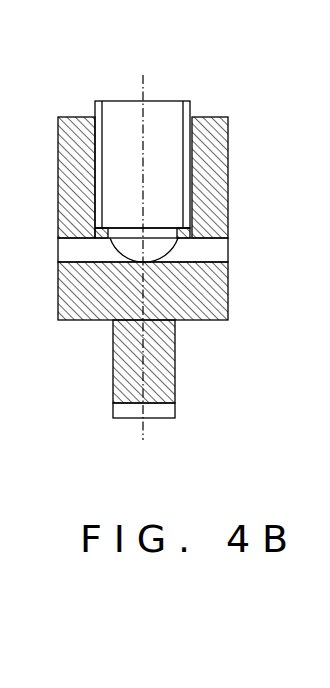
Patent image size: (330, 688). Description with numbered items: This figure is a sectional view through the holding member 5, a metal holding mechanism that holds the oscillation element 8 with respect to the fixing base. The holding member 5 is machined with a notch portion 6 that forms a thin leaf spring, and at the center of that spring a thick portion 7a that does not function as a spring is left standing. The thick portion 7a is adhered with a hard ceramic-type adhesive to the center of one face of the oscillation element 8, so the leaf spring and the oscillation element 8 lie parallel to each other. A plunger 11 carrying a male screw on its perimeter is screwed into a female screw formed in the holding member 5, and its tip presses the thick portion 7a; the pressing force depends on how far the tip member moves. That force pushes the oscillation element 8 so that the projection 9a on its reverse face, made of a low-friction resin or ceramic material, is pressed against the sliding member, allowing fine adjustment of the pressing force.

The holding member 5 is at (205, 130).
The plunger 11 is at (157, 177).
The notch portion 6 is at (212, 247).
The thick portion 7a is at (168, 287).
The oscillation element 8 is at (160, 363).
The projection 9a is at (165, 410).